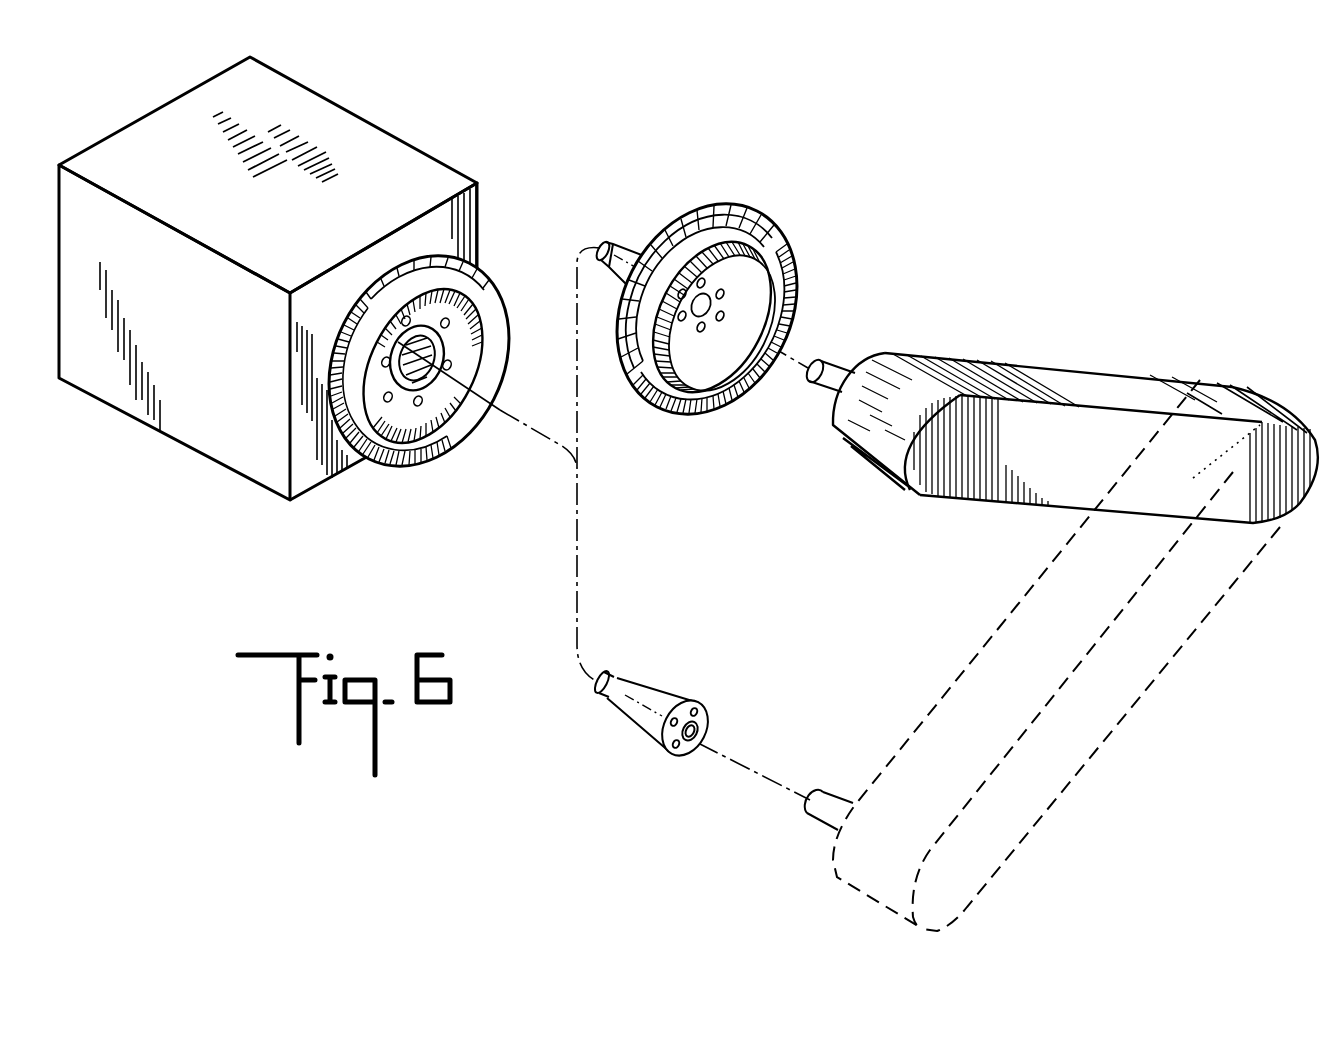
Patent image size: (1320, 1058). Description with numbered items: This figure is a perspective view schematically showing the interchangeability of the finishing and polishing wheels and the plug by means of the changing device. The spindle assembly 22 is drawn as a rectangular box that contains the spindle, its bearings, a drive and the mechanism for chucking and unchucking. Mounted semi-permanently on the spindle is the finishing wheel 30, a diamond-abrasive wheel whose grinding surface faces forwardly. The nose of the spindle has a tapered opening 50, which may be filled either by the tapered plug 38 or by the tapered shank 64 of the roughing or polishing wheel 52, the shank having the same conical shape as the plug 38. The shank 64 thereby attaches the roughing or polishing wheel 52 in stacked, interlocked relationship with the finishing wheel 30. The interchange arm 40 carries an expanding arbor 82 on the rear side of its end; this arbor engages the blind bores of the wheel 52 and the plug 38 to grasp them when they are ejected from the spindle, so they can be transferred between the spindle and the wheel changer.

The spindle assembly 22 is at (415, 155).
The finishing wheel 30 is at (423, 361).
The tapered opening 50 is at (442, 356).
The tapered shank 64 is at (642, 243).
The roughing or polishing wheel 52 is at (708, 207).
The expanding arbor 82 is at (835, 370).
The interchange arm 40 is at (1012, 372).
The plug 38 is at (660, 690).